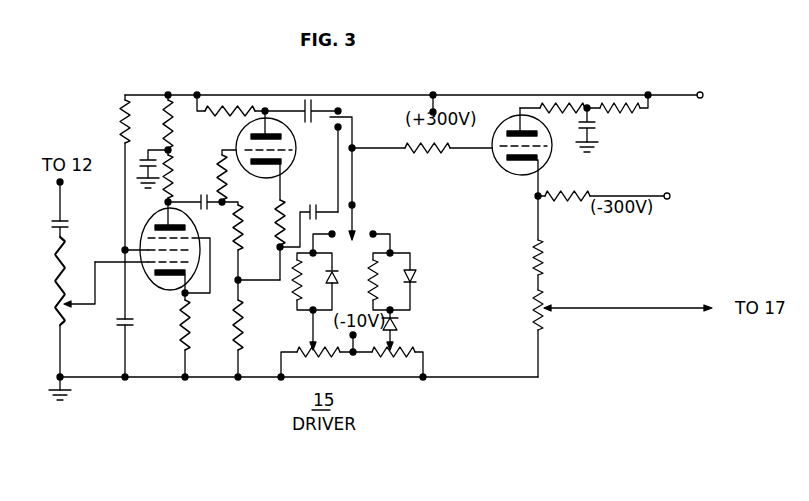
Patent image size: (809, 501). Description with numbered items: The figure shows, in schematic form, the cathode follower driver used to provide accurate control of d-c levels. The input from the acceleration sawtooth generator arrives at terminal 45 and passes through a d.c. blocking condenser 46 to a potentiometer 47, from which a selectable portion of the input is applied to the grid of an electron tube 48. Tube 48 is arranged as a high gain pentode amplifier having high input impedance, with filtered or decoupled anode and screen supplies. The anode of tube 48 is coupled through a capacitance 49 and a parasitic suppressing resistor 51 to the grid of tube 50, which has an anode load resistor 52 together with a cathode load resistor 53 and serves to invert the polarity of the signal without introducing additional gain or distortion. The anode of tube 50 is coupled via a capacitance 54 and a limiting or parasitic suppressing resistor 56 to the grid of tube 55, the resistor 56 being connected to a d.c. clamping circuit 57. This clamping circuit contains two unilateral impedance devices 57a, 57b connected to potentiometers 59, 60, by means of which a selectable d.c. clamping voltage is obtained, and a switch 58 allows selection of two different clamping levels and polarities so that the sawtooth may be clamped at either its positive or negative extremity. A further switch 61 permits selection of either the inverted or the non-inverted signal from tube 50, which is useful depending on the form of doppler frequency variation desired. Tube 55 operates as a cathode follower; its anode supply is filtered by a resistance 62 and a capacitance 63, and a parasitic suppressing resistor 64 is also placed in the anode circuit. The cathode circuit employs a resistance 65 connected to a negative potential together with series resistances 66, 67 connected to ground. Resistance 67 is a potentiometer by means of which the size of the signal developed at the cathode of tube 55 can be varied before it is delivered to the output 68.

The terminal 45 is at (63, 184).
The d.c. blocking condenser 46 is at (52, 226).
The potentiometer 47 is at (56, 300).
The electron tube 48 is at (166, 290).
The capacitance 49 is at (205, 192).
The tube 50 is at (290, 164).
The parasitic suppressing resistor 51 is at (218, 180).
The anode load resistor 52 is at (231, 115).
The cathode load resistor 53 is at (244, 322).
The capacitance 54 is at (304, 123).
The tube 55 is at (498, 164).
The limiting or parasitic suppressing resistor 56 is at (429, 158).
The d.c. clamping circuit 57 is at (354, 290).
The unilateral impedance device 57a is at (329, 273).
The unilateral impedance device 57b is at (403, 284).
The switch 58 is at (356, 209).
The potentiometer 59 is at (317, 362).
The potentiometer 60 is at (378, 358).
The switch 61 is at (356, 119).
The resistance 62 is at (630, 112).
The capacitance 63 is at (593, 128).
The parasitic suppressing resistor 64 is at (553, 114).
The resistance 65 is at (568, 194).
The resistance 66 is at (534, 262).
The potentiometer 67 is at (534, 306).
The output 68 is at (552, 306).